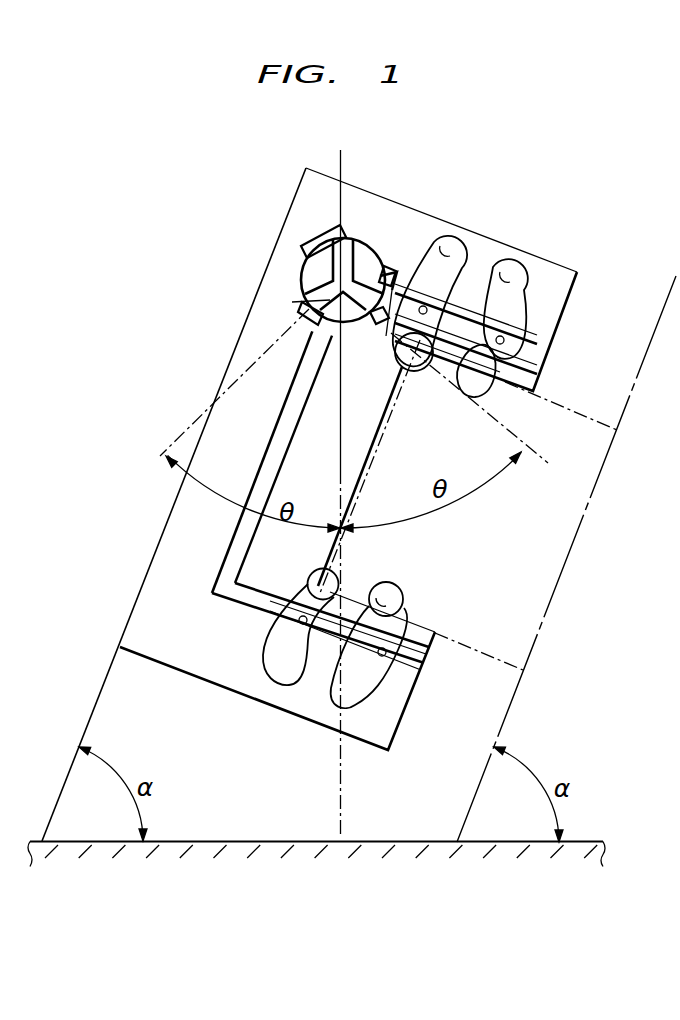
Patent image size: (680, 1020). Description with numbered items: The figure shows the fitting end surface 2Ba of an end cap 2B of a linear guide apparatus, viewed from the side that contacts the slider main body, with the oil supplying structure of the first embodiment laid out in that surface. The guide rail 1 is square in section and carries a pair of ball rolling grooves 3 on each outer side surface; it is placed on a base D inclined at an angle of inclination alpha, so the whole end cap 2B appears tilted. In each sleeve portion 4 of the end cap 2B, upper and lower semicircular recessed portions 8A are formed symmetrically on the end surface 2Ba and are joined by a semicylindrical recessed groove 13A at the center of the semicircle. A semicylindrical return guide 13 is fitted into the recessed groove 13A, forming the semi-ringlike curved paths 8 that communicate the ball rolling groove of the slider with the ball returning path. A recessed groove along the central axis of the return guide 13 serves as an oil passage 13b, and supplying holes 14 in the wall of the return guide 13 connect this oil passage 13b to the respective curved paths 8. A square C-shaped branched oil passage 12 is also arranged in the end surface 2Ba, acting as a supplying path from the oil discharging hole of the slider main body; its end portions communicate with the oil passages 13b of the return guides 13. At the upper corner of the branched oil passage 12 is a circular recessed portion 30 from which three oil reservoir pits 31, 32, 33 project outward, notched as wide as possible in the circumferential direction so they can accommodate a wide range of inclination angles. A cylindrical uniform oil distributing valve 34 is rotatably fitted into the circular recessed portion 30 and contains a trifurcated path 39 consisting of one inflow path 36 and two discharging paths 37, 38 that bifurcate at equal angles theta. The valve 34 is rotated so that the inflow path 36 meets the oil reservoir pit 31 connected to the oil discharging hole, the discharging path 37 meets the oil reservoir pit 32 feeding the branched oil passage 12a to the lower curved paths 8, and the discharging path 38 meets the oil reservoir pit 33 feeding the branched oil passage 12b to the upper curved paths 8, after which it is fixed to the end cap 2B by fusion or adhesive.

The guide rail 1 is at (576, 542).
The end cap 2B is at (155, 553).
The fitting end surface 2Ba is at (134, 606).
The ball rolling groove 3 is at (385, 598).
The sleeve portion 4 is at (563, 280).
The curved path 8 is at (452, 303).
The recessed portion 8A is at (444, 250).
The branched oil passage 12 is at (277, 450).
The branched oil passage 12a is at (233, 548).
The branched oil passage 12b is at (400, 270).
The return guide 13 is at (517, 347).
The recessed groove 13A is at (463, 290).
The oil passage 13b is at (480, 337).
The supplying hole 14 is at (420, 370).
The circular recessed portion 30 is at (306, 293).
The oil reservoir pit 31 is at (300, 242).
The oil reservoir pit 32 is at (307, 313).
The oil reservoir pit 33 is at (393, 266).
The uniform oil distributing valve 34 is at (323, 257).
The inflow path 36 is at (360, 258).
The discharging path 37 is at (302, 325).
The discharging path 38 is at (376, 325).
The trifurcated path 39 is at (328, 287).
The base D is at (498, 742).